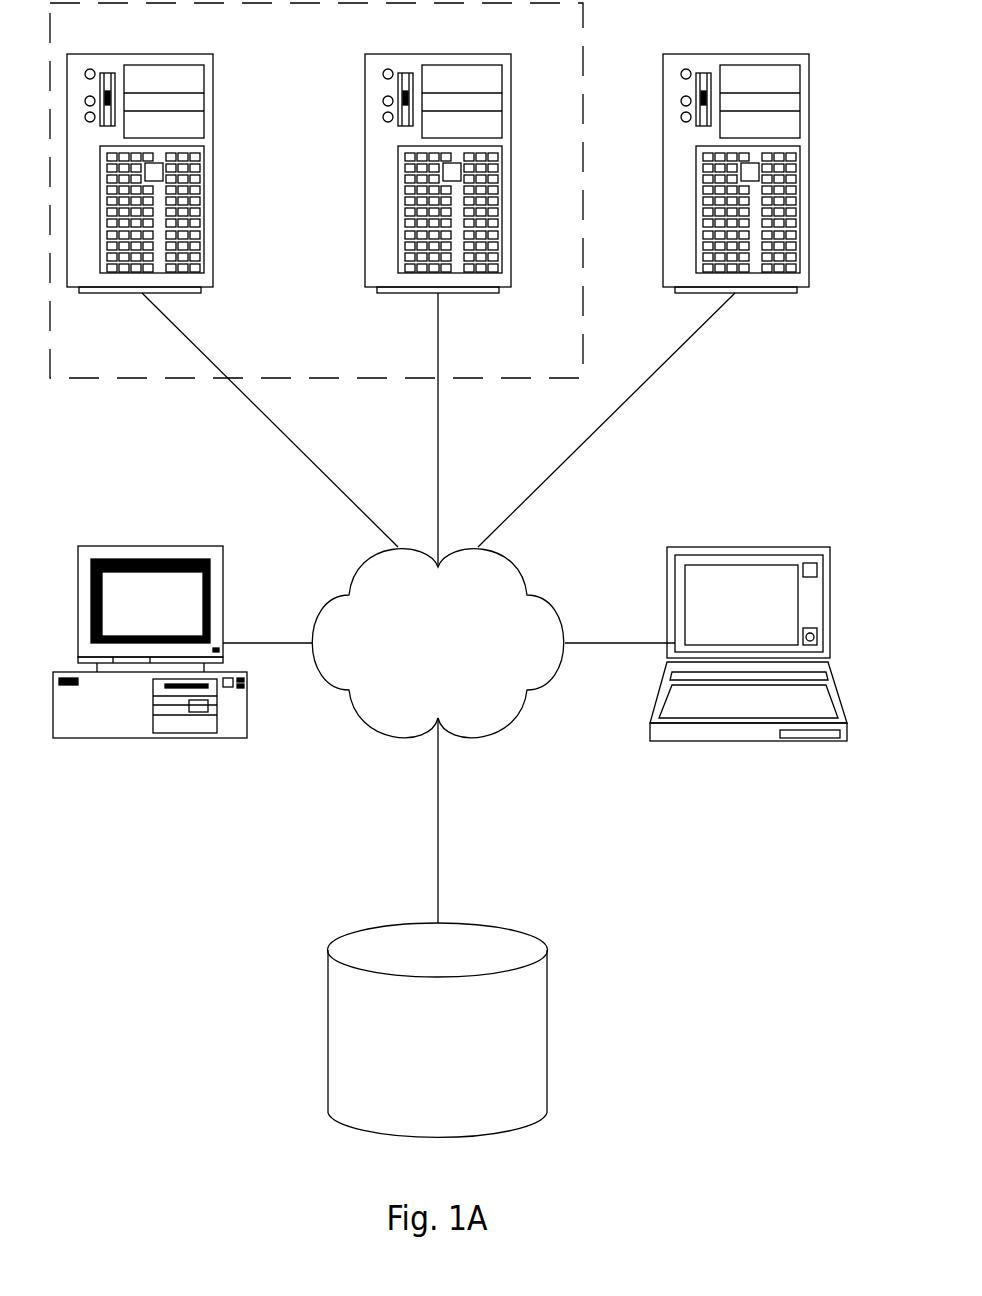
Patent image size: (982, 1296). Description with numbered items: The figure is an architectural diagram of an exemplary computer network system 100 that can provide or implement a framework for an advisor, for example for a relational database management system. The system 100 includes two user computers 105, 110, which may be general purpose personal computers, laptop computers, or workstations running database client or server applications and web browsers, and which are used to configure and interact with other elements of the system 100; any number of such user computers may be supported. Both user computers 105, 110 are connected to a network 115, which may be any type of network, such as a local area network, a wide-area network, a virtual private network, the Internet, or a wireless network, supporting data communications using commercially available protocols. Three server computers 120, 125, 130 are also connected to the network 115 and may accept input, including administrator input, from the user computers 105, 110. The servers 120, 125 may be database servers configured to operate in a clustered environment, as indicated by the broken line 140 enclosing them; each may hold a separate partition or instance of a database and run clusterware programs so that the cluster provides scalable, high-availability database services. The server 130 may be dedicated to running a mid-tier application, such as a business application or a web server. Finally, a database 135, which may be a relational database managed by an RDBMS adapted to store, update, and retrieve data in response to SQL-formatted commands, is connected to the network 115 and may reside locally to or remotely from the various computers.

The system 100 is at (246, 876).
The user computer 105 is at (231, 738).
The user computer 110 is at (793, 741).
The network 115 is at (512, 720).
The server computer 120 is at (192, 293).
The server computer 125 is at (490, 293).
The server computer 130 is at (790, 293).
The database 135 is at (512, 1133).
The broken line 140 is at (72, 378).